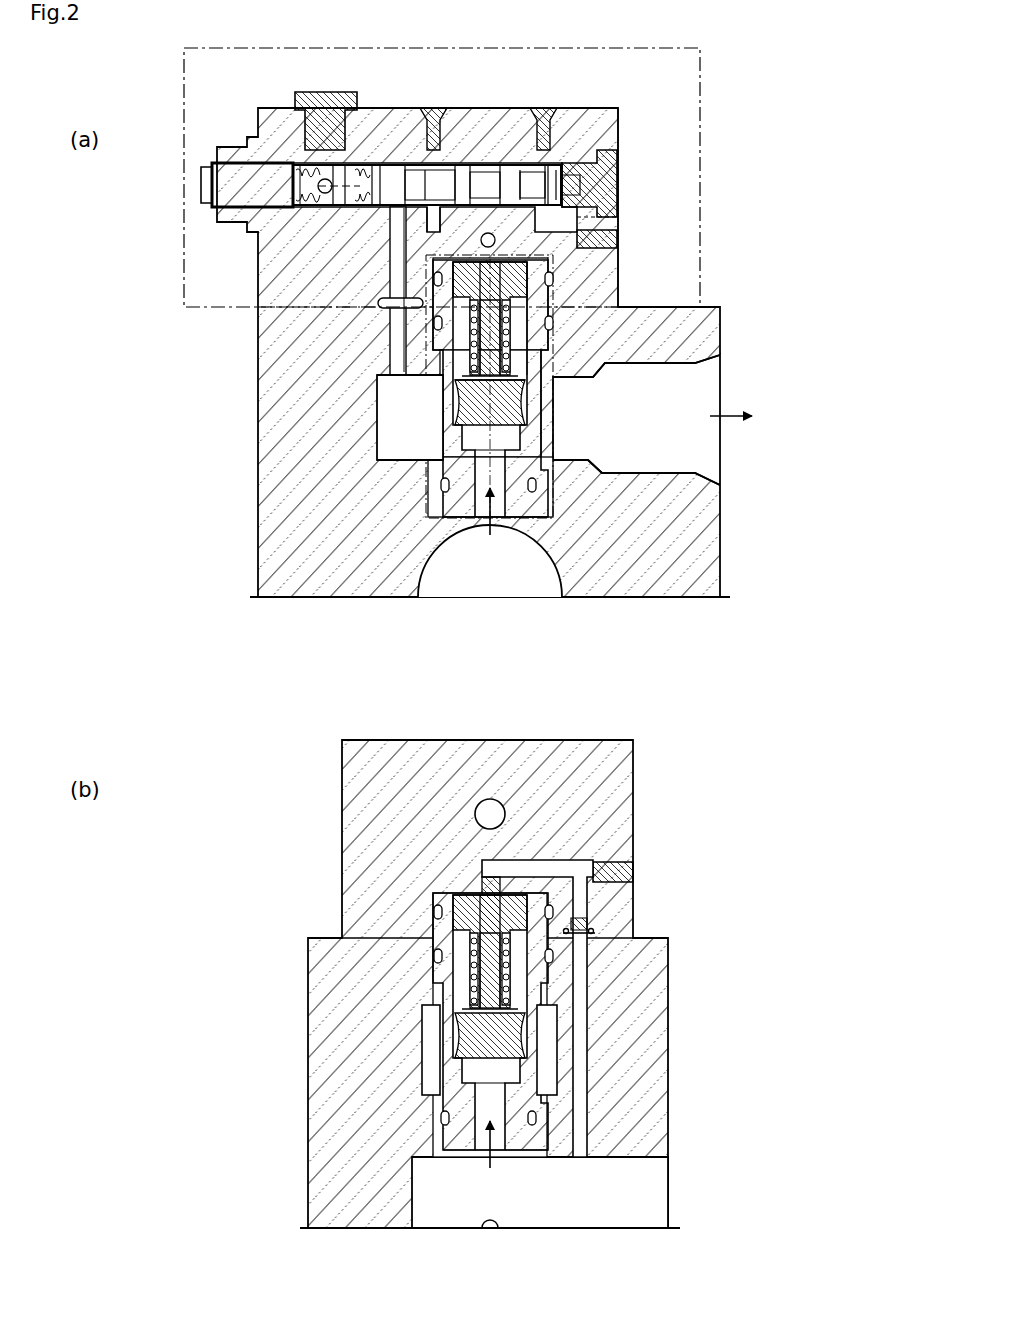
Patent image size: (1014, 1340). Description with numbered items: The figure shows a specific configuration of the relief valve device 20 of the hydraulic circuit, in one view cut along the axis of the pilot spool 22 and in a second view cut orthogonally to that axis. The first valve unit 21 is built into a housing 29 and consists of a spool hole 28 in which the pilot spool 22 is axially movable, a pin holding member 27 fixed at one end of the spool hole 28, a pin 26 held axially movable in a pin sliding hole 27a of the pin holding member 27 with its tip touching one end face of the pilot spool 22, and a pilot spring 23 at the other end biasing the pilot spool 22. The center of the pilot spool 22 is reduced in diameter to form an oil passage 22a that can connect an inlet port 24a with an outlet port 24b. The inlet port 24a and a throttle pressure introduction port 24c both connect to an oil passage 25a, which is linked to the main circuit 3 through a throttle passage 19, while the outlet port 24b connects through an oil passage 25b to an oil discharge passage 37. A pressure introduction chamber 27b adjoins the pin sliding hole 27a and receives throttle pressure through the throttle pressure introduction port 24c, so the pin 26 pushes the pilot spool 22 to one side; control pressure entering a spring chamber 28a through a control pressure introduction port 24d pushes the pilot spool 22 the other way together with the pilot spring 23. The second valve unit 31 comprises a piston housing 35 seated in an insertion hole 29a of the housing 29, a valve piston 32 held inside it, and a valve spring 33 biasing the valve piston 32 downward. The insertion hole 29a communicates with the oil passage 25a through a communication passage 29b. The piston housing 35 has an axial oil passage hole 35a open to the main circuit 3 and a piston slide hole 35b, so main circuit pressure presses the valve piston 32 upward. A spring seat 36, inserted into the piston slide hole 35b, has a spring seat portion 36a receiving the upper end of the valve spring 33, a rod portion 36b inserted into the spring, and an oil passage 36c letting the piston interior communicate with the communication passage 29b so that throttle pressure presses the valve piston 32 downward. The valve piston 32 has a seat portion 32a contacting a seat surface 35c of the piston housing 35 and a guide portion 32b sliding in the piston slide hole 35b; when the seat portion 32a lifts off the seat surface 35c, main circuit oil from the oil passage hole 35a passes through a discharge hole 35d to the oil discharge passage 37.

The relief valve device 20 is at (714, 63).
The first valve unit 21 is at (710, 152).
The pilot spool 22 is at (398, 170).
The oil passage 22a is at (437, 108).
The pilot spring 23 is at (300, 150).
The inlet port 24a is at (428, 212).
The outlet port 24b is at (393, 208).
The throttle pressure introduction port 24c is at (580, 185).
The control pressure introduction port 24d is at (342, 170).
The oil passage 25a is at (595, 238).
The oil passage 25b is at (397, 280).
The pin 26 is at (560, 165).
The pin holding member 27 is at (532, 152).
The pin sliding hole 27a is at (530, 180).
The pressure introduction chamber 27b is at (560, 180).
The spool hole 28 is at (455, 172).
The spring chamber 28a is at (326, 176).
The housing 29 is at (262, 308).
The insertion hole 29a is at (436, 322).
The communication passage 29b is at (498, 252).
The second valve unit 31 is at (380, 432).
The valve piston 32 is at (194, 398).
The seat portion 32a is at (440, 410).
The guide portion 32b is at (440, 352).
The valve spring 33 is at (498, 352).
The piston housing 35 is at (542, 458).
The oil passage hole 35a is at (445, 520).
The piston slide hole 35b is at (527, 386).
The seat surface 35c is at (492, 545).
The discharge hole 35d is at (540, 392).
The spring seat 36 is at (782, 276).
The spring seat portion 36a is at (522, 300).
The rod portion 36b is at (522, 322).
The oil passage 36c is at (545, 276).
The oil discharge passage 37 is at (705, 448).
The main circuit 3 is at (462, 584).
The throttle passage 19 is at (590, 925).